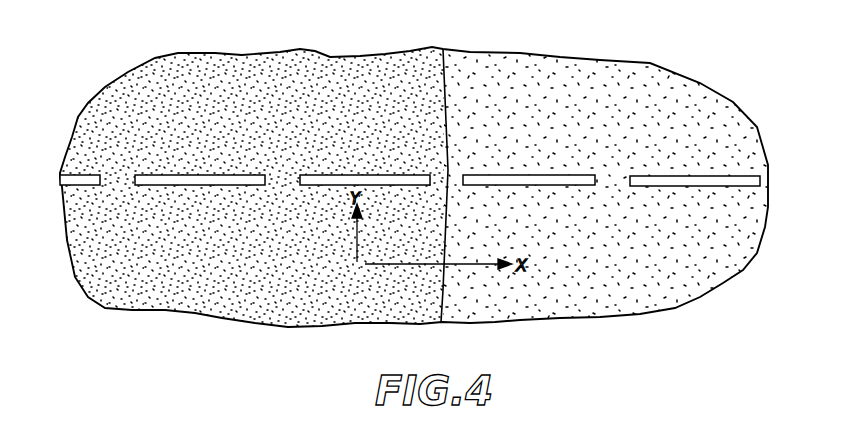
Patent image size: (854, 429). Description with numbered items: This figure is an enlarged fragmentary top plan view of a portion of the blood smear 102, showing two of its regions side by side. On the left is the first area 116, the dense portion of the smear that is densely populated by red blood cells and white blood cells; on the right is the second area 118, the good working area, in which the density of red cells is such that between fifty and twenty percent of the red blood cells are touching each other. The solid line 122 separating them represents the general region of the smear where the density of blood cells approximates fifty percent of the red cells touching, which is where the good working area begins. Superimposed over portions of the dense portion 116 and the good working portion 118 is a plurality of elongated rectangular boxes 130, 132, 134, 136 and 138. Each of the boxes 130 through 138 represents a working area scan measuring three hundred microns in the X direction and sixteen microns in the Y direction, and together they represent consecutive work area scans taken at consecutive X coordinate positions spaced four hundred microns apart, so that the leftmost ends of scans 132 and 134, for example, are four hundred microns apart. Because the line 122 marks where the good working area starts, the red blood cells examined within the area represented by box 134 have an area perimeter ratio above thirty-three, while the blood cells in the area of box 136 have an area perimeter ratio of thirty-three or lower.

The blood smear 102 is at (250, 283).
The first area 116 is at (372, 114).
The second area 118 is at (534, 114).
The solid line 122 is at (441, 322).
The rectangular box 130 is at (79, 176).
The rectangular box 132 is at (186, 176).
The rectangular box 134 is at (352, 176).
The rectangular box 136 is at (494, 176).
The rectangular box 138 is at (654, 177).